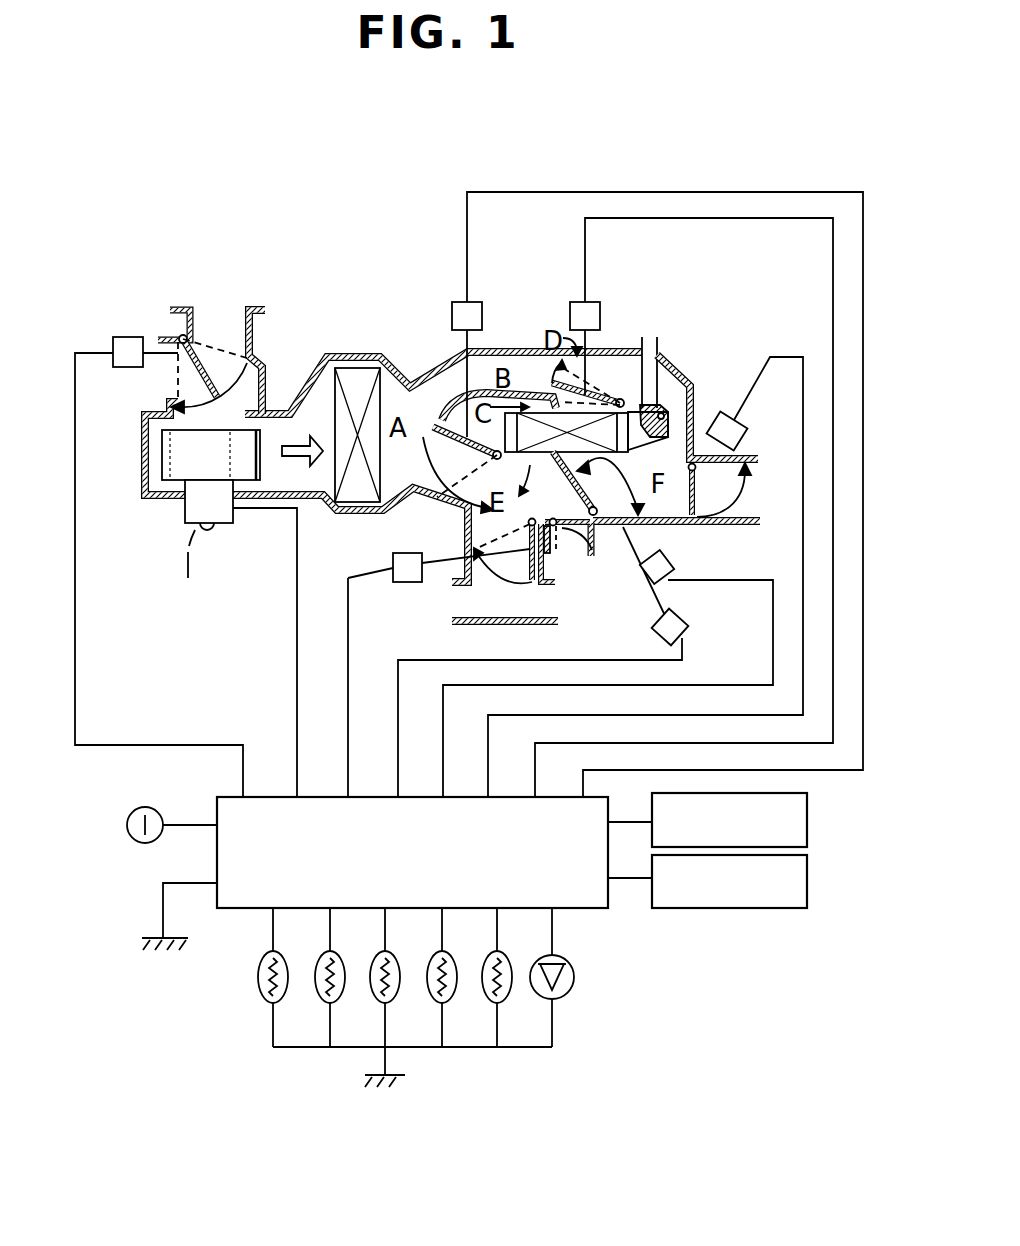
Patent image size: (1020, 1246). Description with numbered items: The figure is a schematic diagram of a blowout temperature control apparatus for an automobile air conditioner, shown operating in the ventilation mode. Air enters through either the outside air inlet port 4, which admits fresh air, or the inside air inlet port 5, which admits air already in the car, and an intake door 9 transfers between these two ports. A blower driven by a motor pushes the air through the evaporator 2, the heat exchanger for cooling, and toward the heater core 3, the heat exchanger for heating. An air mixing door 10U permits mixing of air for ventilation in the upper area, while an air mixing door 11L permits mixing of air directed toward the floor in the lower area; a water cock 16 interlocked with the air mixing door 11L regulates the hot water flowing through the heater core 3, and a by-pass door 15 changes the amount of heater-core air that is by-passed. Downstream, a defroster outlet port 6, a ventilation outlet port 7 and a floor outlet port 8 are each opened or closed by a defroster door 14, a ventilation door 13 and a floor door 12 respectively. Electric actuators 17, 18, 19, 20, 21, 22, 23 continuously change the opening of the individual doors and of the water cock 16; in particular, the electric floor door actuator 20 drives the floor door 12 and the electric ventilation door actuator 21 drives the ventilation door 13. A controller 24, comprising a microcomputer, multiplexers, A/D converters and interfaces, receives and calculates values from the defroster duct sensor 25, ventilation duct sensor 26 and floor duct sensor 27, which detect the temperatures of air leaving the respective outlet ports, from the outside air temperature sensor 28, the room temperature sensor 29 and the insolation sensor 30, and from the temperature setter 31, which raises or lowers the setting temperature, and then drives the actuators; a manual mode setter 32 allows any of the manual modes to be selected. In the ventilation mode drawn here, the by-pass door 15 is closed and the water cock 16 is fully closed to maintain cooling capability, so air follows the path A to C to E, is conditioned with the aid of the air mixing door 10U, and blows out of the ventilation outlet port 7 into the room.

The evaporator 2 is at (353, 502).
The heater core 3 is at (540, 413).
The outside air inlet port 4 is at (225, 323).
The inside air inlet port 5 is at (150, 382).
The defroster outlet port 6 is at (607, 537).
The ventilation outlet port 7 is at (469, 606).
The floor outlet port 8 is at (737, 517).
The intake door 9 is at (210, 375).
The air mixing door 10U is at (455, 420).
The air mixing door 11L is at (577, 386).
The floor door 12 is at (737, 525).
The ventilation door 13 is at (532, 567).
The defroster door 14 is at (572, 537).
The by-pass door 15 is at (577, 487).
The water cock 16 is at (655, 392).
The electric actuator 17 is at (128, 337).
The electric actuator 18 is at (478, 302).
The electric actuator 19 is at (598, 302).
The electric floor door actuator 20 is at (740, 425).
The electric ventilation door actuator 21 is at (415, 553).
The electric actuator 22 is at (687, 623).
The electric actuator 23 is at (677, 556).
The controller 24 is at (238, 908).
The defroster duct sensor 25 is at (264, 998).
The ventilation duct sensor 26 is at (321, 998).
The floor duct sensor 27 is at (376, 998).
The outside air temperature sensor 28 is at (433, 998).
The room temperature sensor 29 is at (488, 998).
The insolation sensor 30 is at (541, 996).
The temperature setter 31 is at (808, 820).
The manual mode setter 32 is at (808, 880).